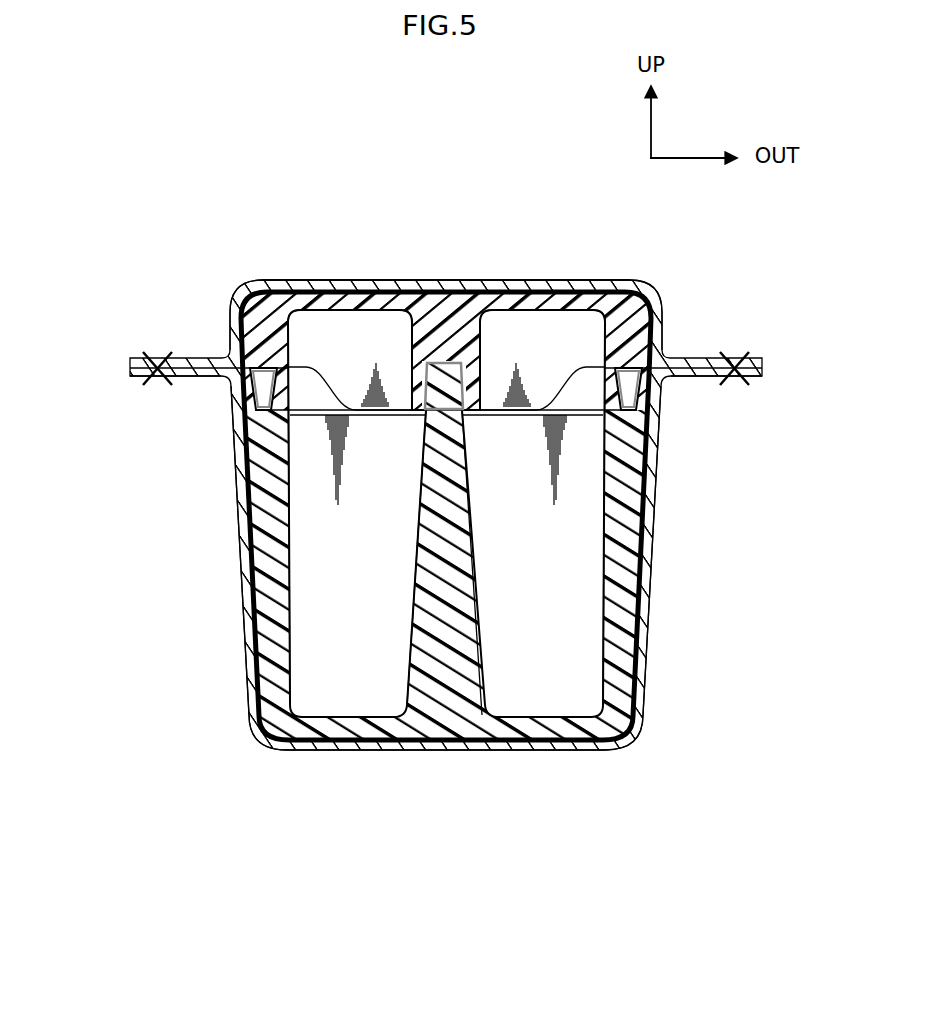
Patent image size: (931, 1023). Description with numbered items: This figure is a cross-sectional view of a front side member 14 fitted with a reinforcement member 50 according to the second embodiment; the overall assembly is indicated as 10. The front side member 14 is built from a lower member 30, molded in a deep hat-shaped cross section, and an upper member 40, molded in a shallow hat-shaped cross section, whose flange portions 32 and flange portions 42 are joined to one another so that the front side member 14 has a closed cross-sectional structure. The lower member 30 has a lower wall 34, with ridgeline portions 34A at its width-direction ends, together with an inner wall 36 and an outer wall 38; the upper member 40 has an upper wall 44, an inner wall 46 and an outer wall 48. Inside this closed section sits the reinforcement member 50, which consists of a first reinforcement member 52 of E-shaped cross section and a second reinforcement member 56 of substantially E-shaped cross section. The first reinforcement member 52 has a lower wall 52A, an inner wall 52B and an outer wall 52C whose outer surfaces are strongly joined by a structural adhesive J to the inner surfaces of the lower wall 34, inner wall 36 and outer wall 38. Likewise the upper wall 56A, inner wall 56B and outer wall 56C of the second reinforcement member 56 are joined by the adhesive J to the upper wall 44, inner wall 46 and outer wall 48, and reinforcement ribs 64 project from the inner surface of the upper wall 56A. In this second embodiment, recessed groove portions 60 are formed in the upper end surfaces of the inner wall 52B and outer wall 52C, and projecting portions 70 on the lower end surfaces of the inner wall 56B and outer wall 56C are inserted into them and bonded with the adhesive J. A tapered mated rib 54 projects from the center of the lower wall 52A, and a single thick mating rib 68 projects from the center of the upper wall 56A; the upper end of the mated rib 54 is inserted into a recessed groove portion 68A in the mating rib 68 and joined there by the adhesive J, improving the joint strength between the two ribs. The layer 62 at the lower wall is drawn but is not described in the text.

The device 10 is at (329, 199).
The front side member 14 is at (236, 274).
The lower member 30 is at (461, 757).
The flange portions 32 is at (131, 378).
The lower wall 34 is at (438, 755).
The ridgeline portions 34A is at (265, 736).
The inner wall 36 is at (232, 547).
The outer wall 38 is at (660, 521).
The upper member 40 is at (451, 272).
The flange portions 42 is at (130, 359).
The upper wall 44 is at (380, 280).
The inner wall 46 is at (232, 345).
The outer wall 48 is at (662, 338).
The reinforcement member 50 is at (262, 714).
The first reinforcement member 52 is at (578, 702).
The lower wall 52A is at (372, 703).
The inner wall 52B is at (301, 570).
The outer wall 52C is at (605, 568).
The mated rib 54 is at (480, 572).
The second reinforcement member 56 is at (590, 326).
The upper wall 56A is at (316, 314).
The inner wall 56B is at (288, 352).
The outer wall 56C is at (601, 355).
The recessed groove portions 60 is at (236, 444).
The bottom inner layer 62 is at (328, 697).
The reinforcement ribs 64 is at (353, 323).
The mating rib 68 is at (397, 418).
The recessed groove portion 68A is at (467, 352).
The projecting portions 70 is at (256, 393).
The structural adhesive J is at (253, 404).